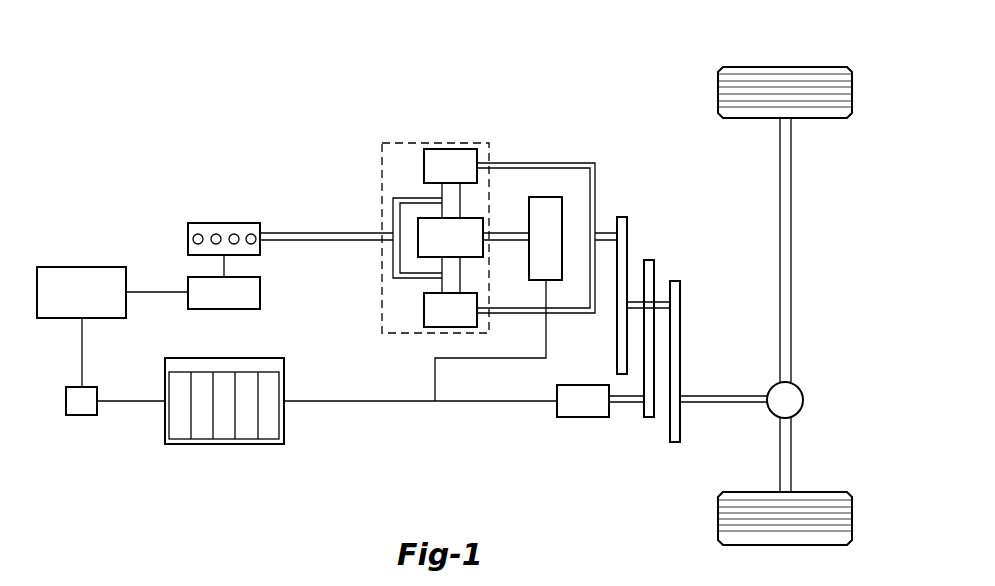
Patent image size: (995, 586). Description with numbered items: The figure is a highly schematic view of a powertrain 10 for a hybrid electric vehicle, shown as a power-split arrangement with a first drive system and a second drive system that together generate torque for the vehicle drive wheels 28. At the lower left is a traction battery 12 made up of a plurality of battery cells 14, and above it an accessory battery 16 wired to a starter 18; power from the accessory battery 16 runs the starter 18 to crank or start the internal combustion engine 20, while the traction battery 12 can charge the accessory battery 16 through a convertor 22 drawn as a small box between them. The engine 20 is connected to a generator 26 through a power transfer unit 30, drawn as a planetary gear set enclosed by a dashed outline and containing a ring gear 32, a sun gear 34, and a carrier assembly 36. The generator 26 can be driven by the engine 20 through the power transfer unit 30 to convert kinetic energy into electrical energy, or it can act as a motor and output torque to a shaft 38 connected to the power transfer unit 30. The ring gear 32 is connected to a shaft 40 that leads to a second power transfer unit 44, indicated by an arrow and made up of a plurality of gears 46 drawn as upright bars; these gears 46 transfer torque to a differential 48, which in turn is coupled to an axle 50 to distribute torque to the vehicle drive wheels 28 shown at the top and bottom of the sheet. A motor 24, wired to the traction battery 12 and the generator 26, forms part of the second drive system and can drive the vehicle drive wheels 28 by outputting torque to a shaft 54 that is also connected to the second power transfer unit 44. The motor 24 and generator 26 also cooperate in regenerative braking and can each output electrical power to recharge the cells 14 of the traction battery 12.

The powertrain 10 is at (260, 103).
The traction battery 12 is at (285, 428).
The battery cells 14 is at (180, 440).
The accessory battery 16 is at (80, 267).
The starter 18 is at (260, 294).
The internal combustion engine 20 is at (190, 223).
The convertor 22 is at (80, 417).
The motor 24 is at (582, 417).
The generator 26 is at (562, 207).
The vehicle drive wheels 28 is at (786, 67).
The power transfer unit 30 is at (489, 152).
The ring gear 32 is at (424, 165).
The sun gear 34 is at (470, 258).
The carrier assembly 36 is at (393, 217).
The shaft 38 is at (513, 232).
The shaft 40 is at (606, 245).
The second power transfer unit 44 is at (693, 226).
The gears 46 is at (627, 230).
The differential 48 is at (803, 401).
The axle 50 is at (791, 288).
The shaft 54 is at (627, 405).